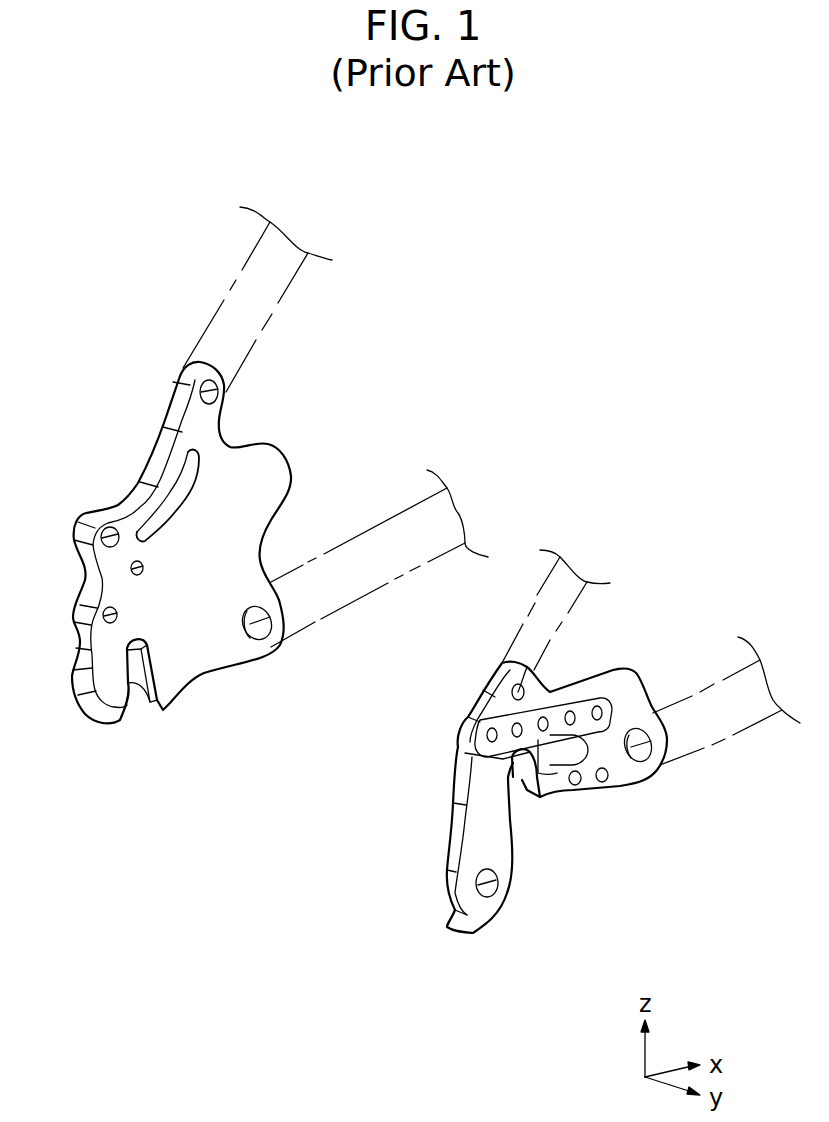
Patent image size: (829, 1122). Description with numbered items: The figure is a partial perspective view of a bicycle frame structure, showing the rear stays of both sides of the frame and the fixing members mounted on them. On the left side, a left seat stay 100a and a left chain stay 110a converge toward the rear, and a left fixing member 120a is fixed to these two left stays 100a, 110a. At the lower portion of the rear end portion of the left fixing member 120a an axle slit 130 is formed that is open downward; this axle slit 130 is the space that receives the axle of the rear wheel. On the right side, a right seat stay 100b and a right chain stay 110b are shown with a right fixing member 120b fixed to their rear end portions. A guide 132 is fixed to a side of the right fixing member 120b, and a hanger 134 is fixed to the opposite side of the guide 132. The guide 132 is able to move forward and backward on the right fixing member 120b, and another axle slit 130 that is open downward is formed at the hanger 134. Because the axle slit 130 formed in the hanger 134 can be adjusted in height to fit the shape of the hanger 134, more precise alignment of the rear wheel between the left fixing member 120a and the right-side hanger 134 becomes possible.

The left seat stay 100a is at (268, 317).
The left chain stay 110a is at (388, 520).
The left fixing member 120a is at (223, 497).
The axle slit 130 is at (147, 703).
The right seat stay 100b is at (560, 623).
The right chain stay 110b is at (723, 737).
The right fixing member 120b is at (620, 787).
The guide 132 is at (550, 743).
The hanger 134 is at (493, 837).